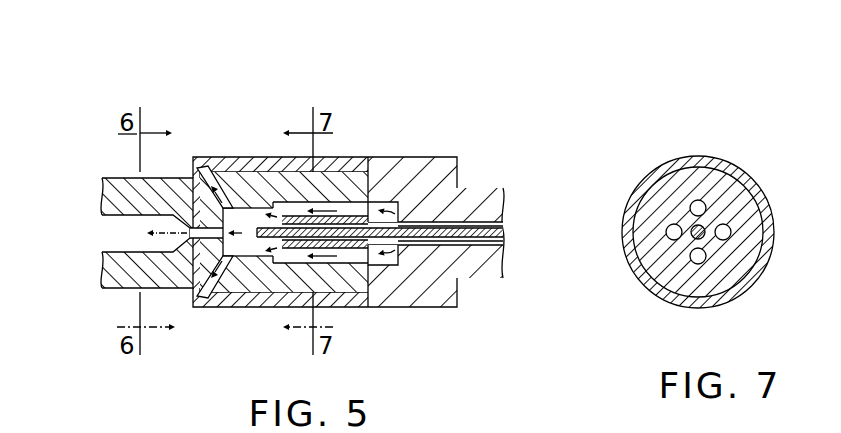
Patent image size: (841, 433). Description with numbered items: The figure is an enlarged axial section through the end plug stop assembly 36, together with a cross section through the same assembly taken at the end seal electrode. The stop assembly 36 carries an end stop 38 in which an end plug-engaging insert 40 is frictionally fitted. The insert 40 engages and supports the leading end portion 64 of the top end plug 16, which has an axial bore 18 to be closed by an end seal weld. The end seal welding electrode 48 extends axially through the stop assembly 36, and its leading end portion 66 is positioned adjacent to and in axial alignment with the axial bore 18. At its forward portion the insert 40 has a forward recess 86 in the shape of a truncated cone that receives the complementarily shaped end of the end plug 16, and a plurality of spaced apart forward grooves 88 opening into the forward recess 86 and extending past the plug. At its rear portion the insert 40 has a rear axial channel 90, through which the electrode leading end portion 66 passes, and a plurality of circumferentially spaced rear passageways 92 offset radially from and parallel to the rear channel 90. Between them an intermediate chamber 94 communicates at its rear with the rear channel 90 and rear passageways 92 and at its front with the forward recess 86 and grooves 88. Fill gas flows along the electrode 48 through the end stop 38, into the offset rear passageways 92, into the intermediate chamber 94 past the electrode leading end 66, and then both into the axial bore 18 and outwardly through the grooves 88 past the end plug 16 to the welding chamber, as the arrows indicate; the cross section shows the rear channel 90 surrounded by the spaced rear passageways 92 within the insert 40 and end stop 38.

In FIG. 5, the top end plug 16 is at (140, 177).
In FIG. 5, the axial bore 18 is at (203, 175).
In FIG. 5, the stop assembly 36 is at (432, 140).
In FIG. 7, the stop assembly 36 is at (752, 150).
In FIG. 5, the end stop 38 is at (402, 308).
In FIG. 7, the end stop 38 is at (694, 158).
In FIG. 5, the insert 40 is at (290, 292).
In FIG. 7, the insert 40 is at (740, 198).
In FIG. 5, the end seal welding electrode 48 is at (463, 228).
In FIG. 5, the leading end portion of the top end plug 64 is at (240, 208).
In FIG. 5, the leading end portion of the end seal welding electrode 66 is at (275, 263).
In FIG. 7, the leading end portion of the end seal welding electrode 66 is at (745, 180).
In FIG. 5, the forward recess 86 is at (187, 275).
In FIG. 5, the forward grooves 88 is at (224, 206).
In FIG. 5, the rear axial channel 90 is at (355, 237).
In FIG. 7, the rear axial channel 90 is at (692, 237).
In FIG. 5, the rear passageways 92 is at (358, 208).
In FIG. 7, the rear passageways 92 is at (669, 226).
In FIG. 5, the intermediate chamber 94 is at (272, 212).
In FIG. 7, the intermediate chamber 94 is at (767, 223).